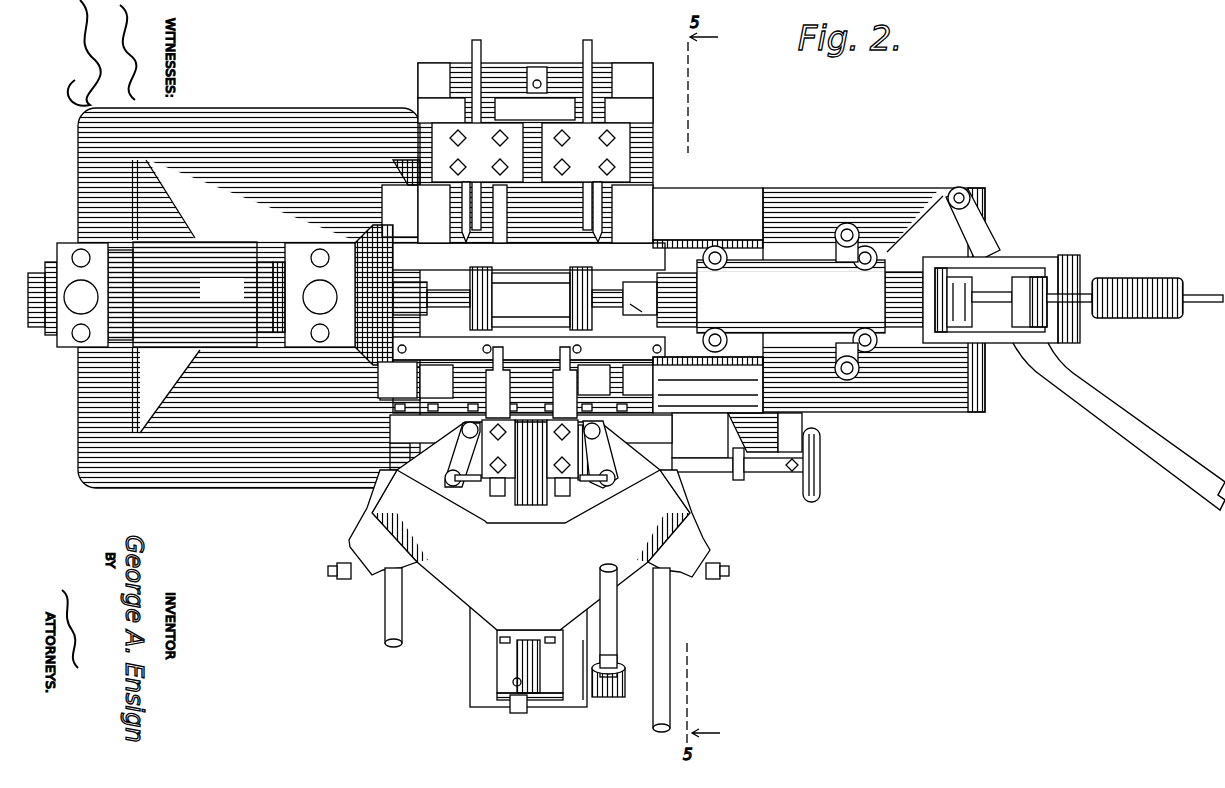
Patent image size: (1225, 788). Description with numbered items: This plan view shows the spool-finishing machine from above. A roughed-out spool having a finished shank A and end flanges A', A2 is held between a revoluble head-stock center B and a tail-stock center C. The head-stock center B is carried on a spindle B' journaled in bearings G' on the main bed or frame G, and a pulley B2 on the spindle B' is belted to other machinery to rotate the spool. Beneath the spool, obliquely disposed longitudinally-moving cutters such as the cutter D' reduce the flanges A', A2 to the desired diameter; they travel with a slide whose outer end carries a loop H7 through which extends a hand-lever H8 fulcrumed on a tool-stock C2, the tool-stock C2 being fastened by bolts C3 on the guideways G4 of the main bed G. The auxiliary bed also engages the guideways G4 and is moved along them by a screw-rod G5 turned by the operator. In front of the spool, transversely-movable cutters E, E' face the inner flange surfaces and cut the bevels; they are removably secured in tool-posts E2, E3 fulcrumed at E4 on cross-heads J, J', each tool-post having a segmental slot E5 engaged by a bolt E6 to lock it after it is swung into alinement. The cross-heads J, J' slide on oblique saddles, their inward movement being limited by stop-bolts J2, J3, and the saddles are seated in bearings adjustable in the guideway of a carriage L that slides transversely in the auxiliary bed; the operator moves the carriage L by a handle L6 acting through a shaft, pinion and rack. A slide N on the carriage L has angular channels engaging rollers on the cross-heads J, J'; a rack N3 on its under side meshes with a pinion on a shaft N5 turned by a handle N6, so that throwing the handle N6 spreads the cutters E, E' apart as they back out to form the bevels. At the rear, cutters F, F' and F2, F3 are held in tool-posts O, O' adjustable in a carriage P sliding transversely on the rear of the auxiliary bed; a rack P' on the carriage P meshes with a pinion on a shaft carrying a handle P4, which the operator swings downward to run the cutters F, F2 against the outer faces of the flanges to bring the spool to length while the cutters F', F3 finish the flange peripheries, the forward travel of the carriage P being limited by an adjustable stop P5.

The main bed or frame G is at (358, 298).
The bearings G' is at (191, 302).
The pulley B2 is at (195, 294).
The spindle B' is at (282, 297).
The head-stock center B is at (431, 306).
The carriage P is at (544, 141).
The stop P5 is at (535, 70).
The tool-post O is at (477, 152).
The tool-post O' is at (586, 152).
The cutter F' is at (475, 178).
The cutter F3 is at (596, 192).
The cutter F is at (447, 224).
The cutter F2 is at (603, 236).
The rack P' is at (507, 225).
The end flange A' is at (476, 288).
The shank A is at (531, 300).
The end flange A2 is at (580, 270).
The tail-stock center C is at (611, 292).
The cutter D' is at (636, 317).
The guideways G4 is at (706, 198).
The tool-stock C2 is at (803, 200).
The bolts C3 is at (834, 235).
The loop H7 is at (1010, 326).
The hand-lever H8 is at (1080, 390).
The screw-rod G5 is at (709, 462).
The carriage L is at (471, 634).
The front cutter E is at (502, 377).
The front cutter E' is at (578, 377).
The slide N is at (531, 526).
The cross-head J is at (373, 522).
The cross-head J' is at (686, 523).
The stop-bolt J2 is at (334, 568).
The stop-bolt J3 is at (727, 573).
The tool-post E2 is at (514, 462).
The tool-post E3 is at (573, 458).
The fulcrum E4 is at (462, 432).
The segmental slot E5 is at (470, 470).
The bolt E6 is at (450, 484).
The handle P4 is at (385, 606).
The handle N6 is at (618, 613).
The shaft N5 is at (630, 698).
The handle L6 is at (671, 626).
The rack N3 is at (527, 706).